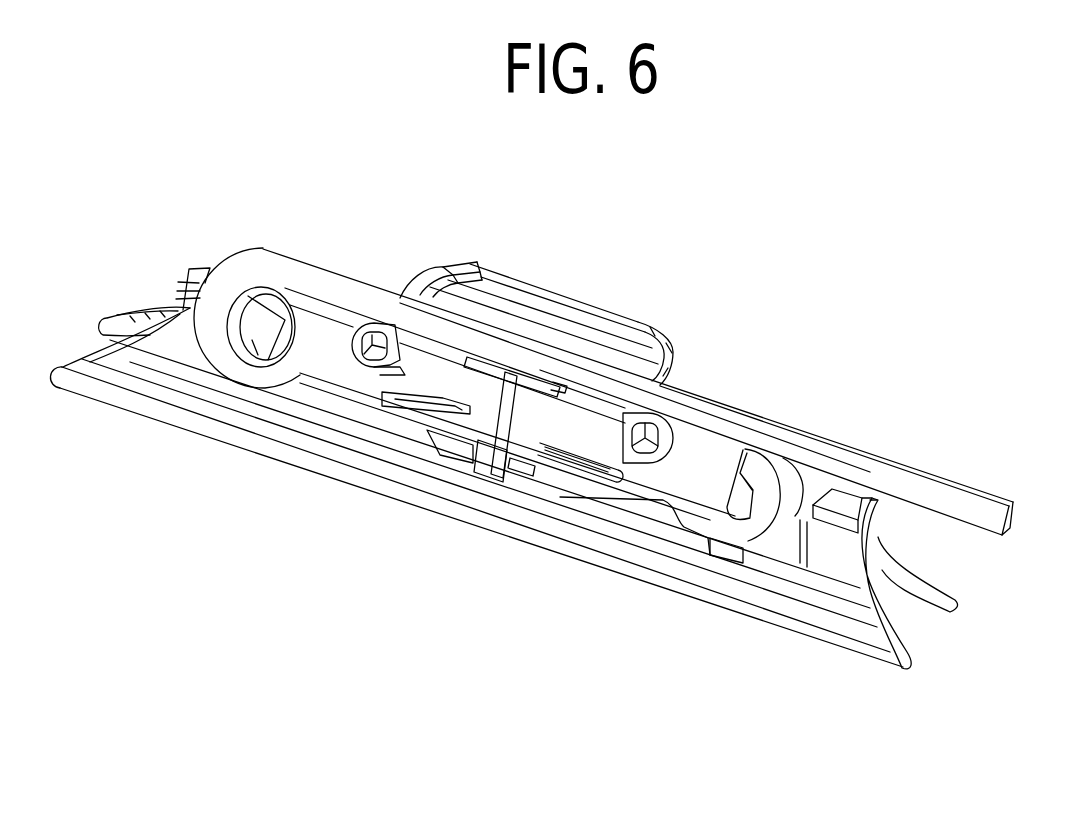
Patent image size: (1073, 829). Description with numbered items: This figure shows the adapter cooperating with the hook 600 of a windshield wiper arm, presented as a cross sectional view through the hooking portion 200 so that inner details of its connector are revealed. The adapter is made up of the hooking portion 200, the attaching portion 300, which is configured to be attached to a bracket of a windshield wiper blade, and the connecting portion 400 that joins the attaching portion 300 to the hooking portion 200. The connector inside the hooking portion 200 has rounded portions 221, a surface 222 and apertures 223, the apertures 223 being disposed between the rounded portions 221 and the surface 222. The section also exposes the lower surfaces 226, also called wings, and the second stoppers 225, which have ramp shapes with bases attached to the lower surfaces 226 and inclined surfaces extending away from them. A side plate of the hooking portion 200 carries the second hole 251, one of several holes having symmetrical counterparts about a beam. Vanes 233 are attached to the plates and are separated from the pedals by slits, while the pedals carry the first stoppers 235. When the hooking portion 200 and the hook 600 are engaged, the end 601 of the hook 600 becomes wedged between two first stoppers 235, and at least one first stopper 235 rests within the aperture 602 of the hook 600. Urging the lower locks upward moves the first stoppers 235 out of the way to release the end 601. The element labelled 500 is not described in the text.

The hooking portion 200 is at (683, 495).
The rounded portions 221 is at (663, 435).
The surface 222 is at (507, 372).
The apertures 223 is at (410, 347).
The second stoppers 225 is at (452, 405).
The lower surfaces 226 is at (397, 363).
The vanes 233 is at (613, 485).
The first stoppers 235 is at (525, 463).
The second hole 251 is at (363, 345).
The attaching portion 300 is at (623, 318).
The connecting portion 400 is at (410, 285).
The spring clip 500 is at (930, 578).
The hook 600 is at (853, 450).
The end 601 is at (492, 470).
The aperture 602 is at (447, 452).